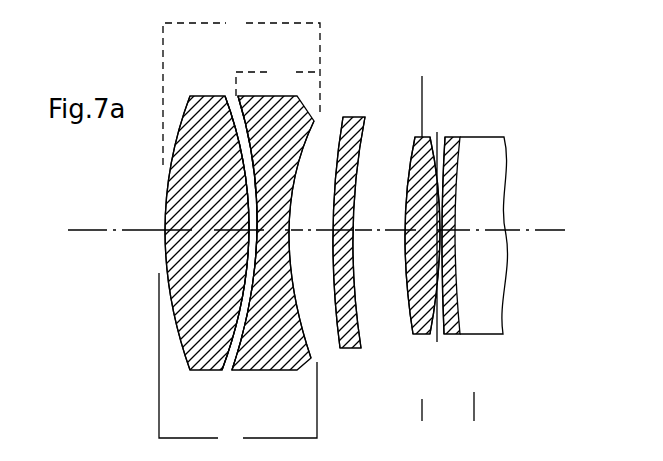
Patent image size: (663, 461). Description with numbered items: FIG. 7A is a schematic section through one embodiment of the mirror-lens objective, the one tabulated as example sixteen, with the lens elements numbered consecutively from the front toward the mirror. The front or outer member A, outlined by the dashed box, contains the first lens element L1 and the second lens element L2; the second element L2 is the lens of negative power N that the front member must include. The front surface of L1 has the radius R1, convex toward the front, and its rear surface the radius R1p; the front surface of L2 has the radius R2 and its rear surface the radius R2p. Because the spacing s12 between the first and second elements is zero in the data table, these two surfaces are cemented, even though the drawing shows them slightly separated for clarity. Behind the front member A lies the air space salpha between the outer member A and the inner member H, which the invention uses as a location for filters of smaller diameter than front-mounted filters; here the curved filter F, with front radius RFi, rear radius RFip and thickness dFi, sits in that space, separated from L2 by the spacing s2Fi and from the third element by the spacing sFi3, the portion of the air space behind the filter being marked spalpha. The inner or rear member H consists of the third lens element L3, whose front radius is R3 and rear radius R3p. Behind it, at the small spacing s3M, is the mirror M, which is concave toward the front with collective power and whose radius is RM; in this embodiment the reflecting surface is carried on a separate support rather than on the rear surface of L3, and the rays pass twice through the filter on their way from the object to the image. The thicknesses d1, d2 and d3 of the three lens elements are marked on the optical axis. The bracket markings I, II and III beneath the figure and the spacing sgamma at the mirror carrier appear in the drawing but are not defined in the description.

The front member A is at (241, 89).
The negative lens element N is at (278, 79).
The first lens group I is at (238, 362).
The second lens group II is at (420, 420).
The third lens group III is at (478, 417).
The first lens element L1 is at (203, 369).
The second lens element L2 is at (265, 369).
The third lens element L3 is at (422, 334).
The filter F is at (350, 348).
The mirror reflecting surface M is at (474, 335).
The rear member H is at (430, 93).
The front surface radius of first element R1 is at (165, 204).
The rear surface radius of first element R1p is at (227, 96).
The front surface radius of second element R2 is at (237, 97).
The rear surface radius of second element R2p is at (311, 121).
The front surface radius of filter RFi is at (343, 116).
The rear surface radius of filter RFip is at (395, 71).
The front surface radius of third element R3 is at (408, 160).
The rear surface radius of third element R3p is at (455, 77).
The mirror radius RM is at (445, 137).
The thickness of first element d1 is at (203, 234).
The thickness of second element d2 is at (274, 236).
The thickness of third element d3 is at (426, 241).
The thickness of filter dFi is at (335, 233).
The spacing between first and second elements s12 is at (227, 370).
The air space α salpha is at (333, 230).
The rear portion of air space α spalpha is at (405, 230).
The spacing between second element and filter s2Fi is at (290, 232).
The spacing between filter and third element sFi3 is at (393, 236).
The spacing between third element and mirror s3M is at (448, 356).
The distance s gamma sgamma is at (442, 224).